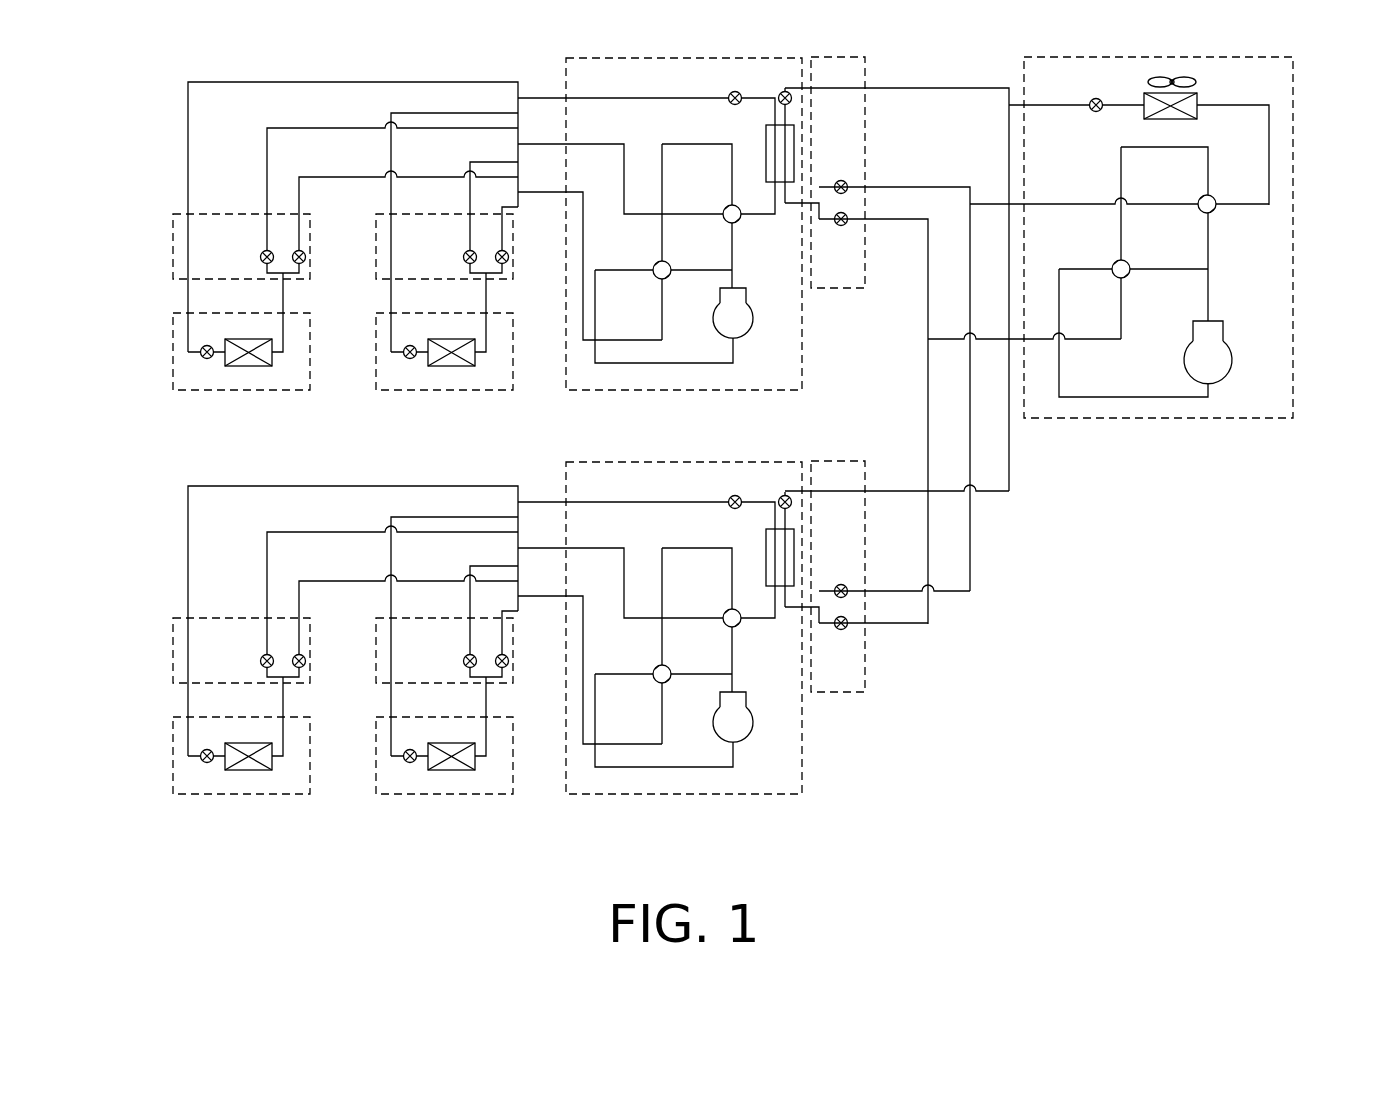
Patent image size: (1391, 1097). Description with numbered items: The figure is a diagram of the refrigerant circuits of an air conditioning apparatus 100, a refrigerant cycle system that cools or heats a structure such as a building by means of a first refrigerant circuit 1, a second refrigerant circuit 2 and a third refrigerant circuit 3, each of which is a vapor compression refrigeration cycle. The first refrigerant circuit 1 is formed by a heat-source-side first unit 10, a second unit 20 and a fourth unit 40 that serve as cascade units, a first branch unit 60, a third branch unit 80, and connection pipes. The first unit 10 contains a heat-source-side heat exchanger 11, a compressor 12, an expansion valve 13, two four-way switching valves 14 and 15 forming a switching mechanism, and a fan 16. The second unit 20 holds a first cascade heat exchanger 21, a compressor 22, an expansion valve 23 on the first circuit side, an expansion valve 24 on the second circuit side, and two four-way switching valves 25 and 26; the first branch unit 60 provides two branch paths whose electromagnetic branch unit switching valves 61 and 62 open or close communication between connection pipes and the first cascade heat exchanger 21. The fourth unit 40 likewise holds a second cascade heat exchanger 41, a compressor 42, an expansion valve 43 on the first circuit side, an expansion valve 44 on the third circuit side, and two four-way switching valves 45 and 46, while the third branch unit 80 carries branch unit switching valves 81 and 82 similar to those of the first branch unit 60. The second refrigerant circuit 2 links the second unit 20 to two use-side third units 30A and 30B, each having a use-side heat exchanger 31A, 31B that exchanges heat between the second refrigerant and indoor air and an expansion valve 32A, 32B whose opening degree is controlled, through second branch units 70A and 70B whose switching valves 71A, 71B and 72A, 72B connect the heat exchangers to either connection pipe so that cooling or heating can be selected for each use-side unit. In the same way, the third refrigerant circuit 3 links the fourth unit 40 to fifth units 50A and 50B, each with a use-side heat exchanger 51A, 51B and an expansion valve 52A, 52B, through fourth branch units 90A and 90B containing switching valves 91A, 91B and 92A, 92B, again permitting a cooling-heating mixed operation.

The first refrigerant circuit 1 is at (1327, 214).
The second refrigerant circuit 2 is at (136, 114).
The third refrigerant circuit 3 is at (288, 610).
The air conditioning apparatus 100 is at (1196, 708).
The first unit 10 is at (1160, 420).
The heat-source-side heat exchanger 11 is at (1197, 119).
The compressor 12 is at (1232, 360).
The expansion valve 13 is at (1090, 112).
The four-way switching valve 14 is at (1213, 212).
The four-way switching valve 15 is at (1113, 262).
The fan 16 is at (1196, 82).
The second unit 20 is at (690, 392).
The first cascade heat exchanger 21 is at (795, 128).
The compressor 22 is at (753, 316).
The expansion valve 23 is at (782, 94).
The expansion valve 24 is at (732, 105).
The four-way switching valve 25 is at (740, 221).
The four-way switching valve 26 is at (655, 263).
The third unit 30A is at (446, 392).
The third unit 30B is at (243, 392).
The use-side heat exchanger 31A is at (468, 366).
The use-side heat exchanger 31B is at (265, 366).
The expansion valve 32A is at (408, 359).
The expansion valve 32B is at (205, 359).
The fourth unit 40 is at (684, 656).
The second cascade heat exchanger 41 is at (813, 541).
The compressor 42 is at (759, 717).
The expansion valve 43 is at (762, 486).
The expansion valve 44 is at (714, 521).
The four-way switching valve 45 is at (759, 636).
The four-way switching valve 46 is at (641, 658).
The fifth unit 50A is at (466, 780).
The fifth unit 50B is at (262, 780).
The use-side heat exchanger 51A is at (482, 769).
The use-side heat exchanger 51B is at (279, 769).
The expansion valve 52A is at (396, 793).
The expansion valve 52B is at (189, 792).
The first branch unit 60 is at (838, 290).
The branch unit switching valve 61 is at (841, 180).
The branch unit switching valve 62 is at (841, 226).
The second branch unit 70A is at (376, 240).
The second branch unit 70B is at (172, 240).
The branch unit switching valve 71A is at (464, 254).
The branch unit switching valve 71B is at (261, 254).
The branch unit switching valve 72A is at (508, 254).
The branch unit switching valve 72B is at (305, 254).
The third branch unit 80 is at (861, 599).
The branch unit switching valve 81 is at (841, 569).
The branch unit switching valve 82 is at (844, 649).
The fourth branch unit 90A is at (420, 633).
The fourth branch unit 90B is at (216, 633).
The branch unit switching valve 91A is at (460, 617).
The branch unit switching valve 91B is at (359, 597).
The branch unit switching valve 92A is at (539, 639).
The branch unit switching valve 92B is at (406, 621).